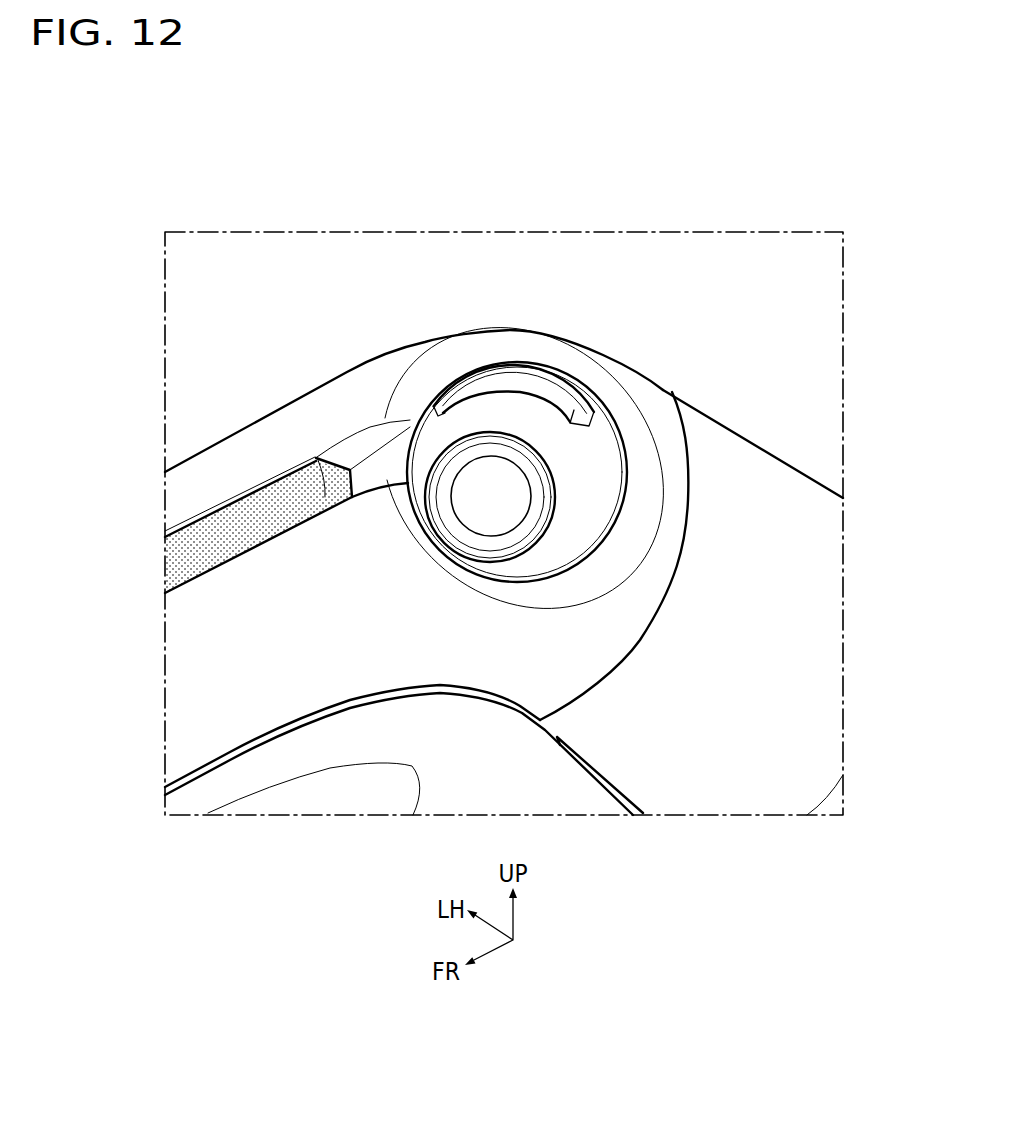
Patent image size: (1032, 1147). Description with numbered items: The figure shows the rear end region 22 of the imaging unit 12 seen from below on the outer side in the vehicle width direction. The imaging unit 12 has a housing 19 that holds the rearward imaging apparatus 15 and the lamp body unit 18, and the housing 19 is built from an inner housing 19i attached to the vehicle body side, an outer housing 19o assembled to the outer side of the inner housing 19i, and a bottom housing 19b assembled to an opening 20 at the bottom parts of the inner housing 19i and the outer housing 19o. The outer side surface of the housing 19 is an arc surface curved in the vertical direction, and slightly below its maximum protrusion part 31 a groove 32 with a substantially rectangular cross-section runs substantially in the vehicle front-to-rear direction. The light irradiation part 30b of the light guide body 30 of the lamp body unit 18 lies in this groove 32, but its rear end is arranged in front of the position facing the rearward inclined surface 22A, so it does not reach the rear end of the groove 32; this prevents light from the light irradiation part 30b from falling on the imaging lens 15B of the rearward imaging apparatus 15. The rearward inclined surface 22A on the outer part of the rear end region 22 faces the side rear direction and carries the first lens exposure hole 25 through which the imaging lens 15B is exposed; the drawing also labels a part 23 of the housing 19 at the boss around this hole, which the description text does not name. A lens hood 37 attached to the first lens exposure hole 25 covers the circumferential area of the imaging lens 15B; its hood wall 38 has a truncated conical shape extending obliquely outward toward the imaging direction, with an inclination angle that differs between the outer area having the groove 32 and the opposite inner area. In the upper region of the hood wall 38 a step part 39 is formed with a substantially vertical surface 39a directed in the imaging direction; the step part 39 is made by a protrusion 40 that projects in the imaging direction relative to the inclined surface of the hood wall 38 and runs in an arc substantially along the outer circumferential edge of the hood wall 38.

The imaging unit 12 is at (728, 378).
The rearward imaging apparatus 15 is at (489, 421).
The imaging lens 15B is at (503, 509).
The lamp body unit 18 is at (203, 585).
The housing 19 is at (314, 789).
The outer housing 19o is at (345, 383).
The inner housing 19i is at (760, 452).
The bottom housing 19b is at (337, 805).
The opening 20 is at (610, 790).
The rear end region 22 is at (807, 560).
The rearward inclined surface 22A is at (436, 363).
The pedestal portion 23 is at (675, 417).
The first lens exposure hole 25 is at (578, 396).
The light guide body 30 is at (237, 507).
The light irradiation part 30b is at (213, 523).
The maximum protrusion part 31 is at (247, 477).
The groove 32 is at (303, 458).
The lens hood 37 is at (625, 524).
The hood wall 38 is at (573, 535).
The step part 39 is at (593, 414).
The substantially vertical surface 39a is at (527, 378).
The protrusion 40 is at (633, 395).